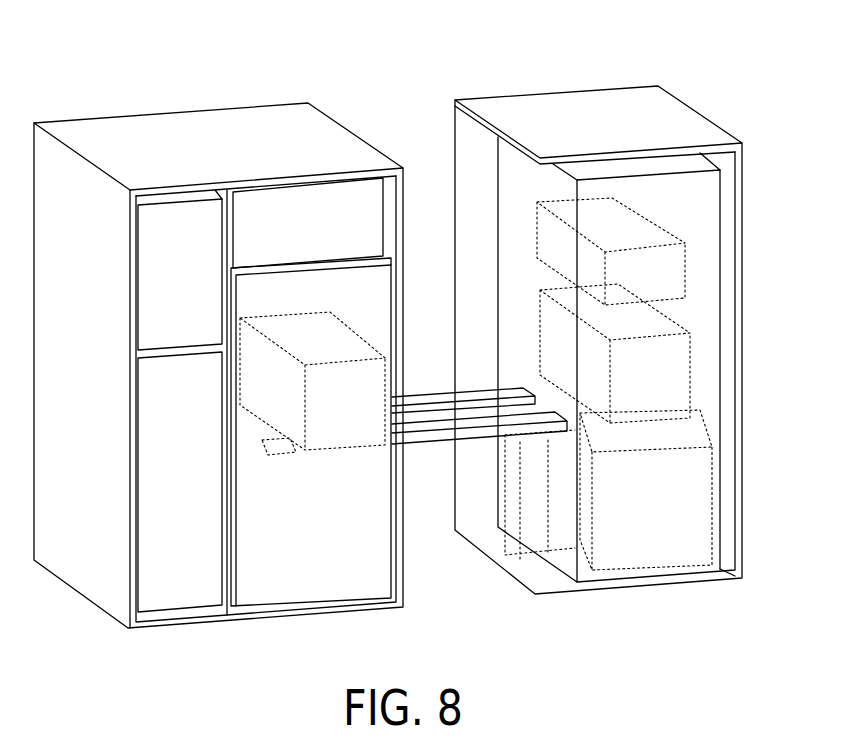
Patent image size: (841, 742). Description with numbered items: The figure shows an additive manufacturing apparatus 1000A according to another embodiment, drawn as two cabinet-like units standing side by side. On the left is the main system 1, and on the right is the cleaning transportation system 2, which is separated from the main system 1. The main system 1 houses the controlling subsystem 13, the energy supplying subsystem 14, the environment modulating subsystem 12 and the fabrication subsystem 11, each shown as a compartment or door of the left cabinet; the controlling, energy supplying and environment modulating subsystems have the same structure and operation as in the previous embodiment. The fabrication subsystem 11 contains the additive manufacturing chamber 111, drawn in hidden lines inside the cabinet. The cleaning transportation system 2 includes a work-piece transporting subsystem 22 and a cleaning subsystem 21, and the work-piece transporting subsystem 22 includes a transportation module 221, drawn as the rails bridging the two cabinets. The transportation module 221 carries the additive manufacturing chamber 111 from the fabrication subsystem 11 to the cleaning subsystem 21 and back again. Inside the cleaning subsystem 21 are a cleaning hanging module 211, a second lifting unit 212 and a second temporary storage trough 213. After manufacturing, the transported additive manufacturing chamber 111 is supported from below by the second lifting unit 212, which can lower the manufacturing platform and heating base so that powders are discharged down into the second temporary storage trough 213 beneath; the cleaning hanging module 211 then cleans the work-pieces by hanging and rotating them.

The additive manufacturing apparatus 1000A is at (128, 56).
The main system 1 is at (218, 365).
The fabrication subsystem 11 is at (311, 432).
The environment modulating subsystem 12 is at (180, 482).
The controlling subsystem 13 is at (180, 274).
The energy supplying subsystem 14 is at (308, 223).
The additive manufacturing chamber 111 is at (465, 369).
The cleaning transportation system 2 is at (598, 340).
The cleaning subsystem 21 is at (648, 376).
The cleaning hanging module 211 is at (611, 251).
The second lifting unit 212 is at (540, 495).
The second temporary storage trough 213 is at (646, 490).
The work-piece transporting subsystem 22 is at (463, 381).
The transportation module 221 is at (479, 444).